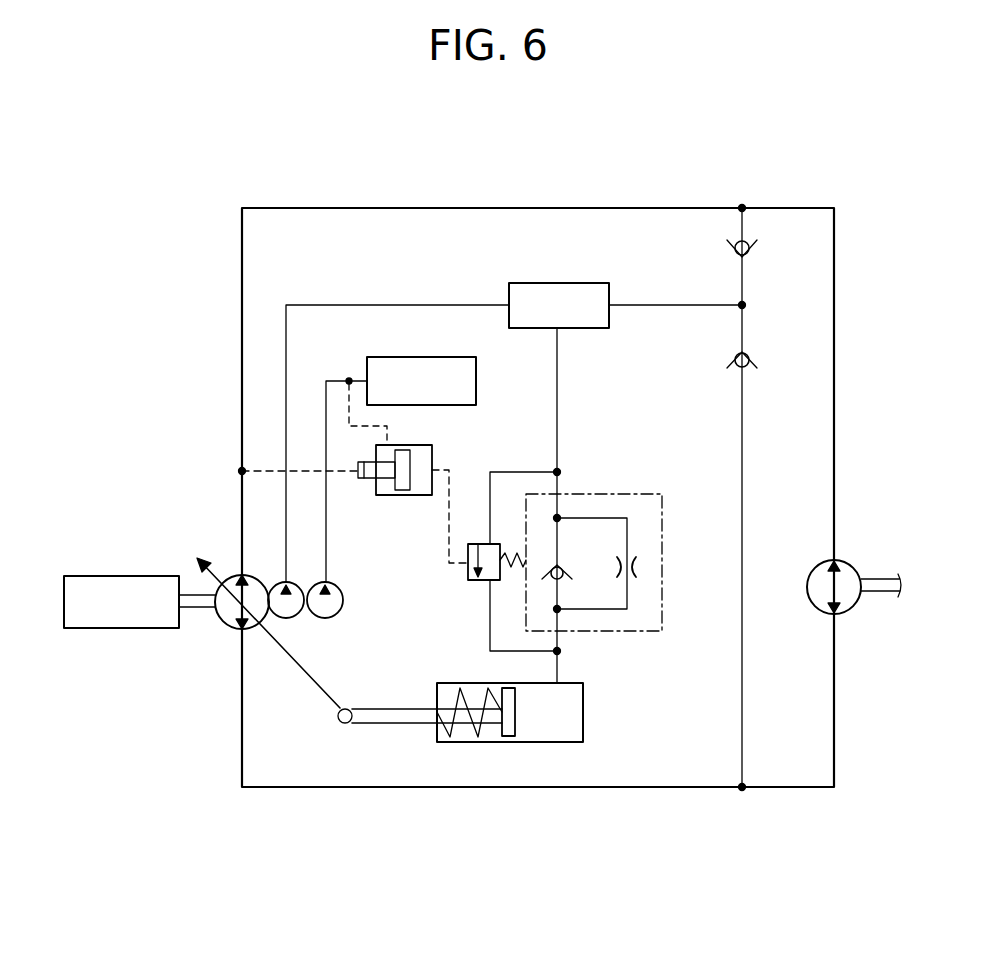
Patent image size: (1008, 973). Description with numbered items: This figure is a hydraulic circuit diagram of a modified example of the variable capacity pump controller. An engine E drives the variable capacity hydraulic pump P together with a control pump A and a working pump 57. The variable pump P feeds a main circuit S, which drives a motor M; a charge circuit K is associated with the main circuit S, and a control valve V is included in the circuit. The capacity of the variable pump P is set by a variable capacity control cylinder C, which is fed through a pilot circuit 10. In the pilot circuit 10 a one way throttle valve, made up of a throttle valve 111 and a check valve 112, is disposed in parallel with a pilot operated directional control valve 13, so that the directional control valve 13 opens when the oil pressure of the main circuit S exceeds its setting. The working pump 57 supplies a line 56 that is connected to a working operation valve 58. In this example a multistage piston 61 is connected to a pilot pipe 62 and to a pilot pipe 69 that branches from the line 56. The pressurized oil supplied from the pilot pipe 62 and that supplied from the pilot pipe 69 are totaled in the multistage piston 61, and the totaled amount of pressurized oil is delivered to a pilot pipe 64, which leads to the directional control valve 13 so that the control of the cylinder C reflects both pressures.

The main circuit S is at (343, 208).
The engine E is at (128, 576).
The variable capacity hydraulic pump P is at (221, 625).
The control pump A is at (292, 618).
The working pump 57 is at (343, 601).
The line 56 is at (325, 402).
The working operation valve 58 is at (418, 357).
The pilot pipe 69 is at (375, 428).
The multistage piston 61 is at (433, 460).
The pilot pipe 62 is at (258, 468).
The pilot pipe 64 is at (447, 522).
The pilot operated directional control valve 13 is at (477, 581).
The control valve V is at (572, 283).
The pilot circuit 10 is at (559, 405).
The throttle valve 111 is at (637, 567).
The check valve 112 is at (562, 582).
The charge circuit K is at (753, 303).
The motor M is at (852, 564).
The variable capacity control cylinder C is at (550, 742).